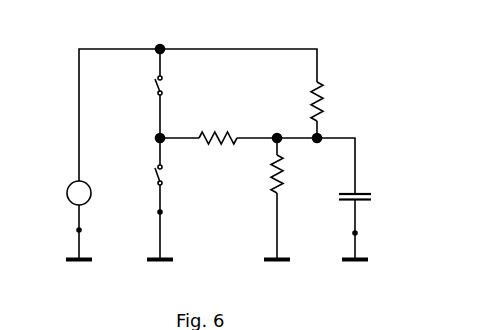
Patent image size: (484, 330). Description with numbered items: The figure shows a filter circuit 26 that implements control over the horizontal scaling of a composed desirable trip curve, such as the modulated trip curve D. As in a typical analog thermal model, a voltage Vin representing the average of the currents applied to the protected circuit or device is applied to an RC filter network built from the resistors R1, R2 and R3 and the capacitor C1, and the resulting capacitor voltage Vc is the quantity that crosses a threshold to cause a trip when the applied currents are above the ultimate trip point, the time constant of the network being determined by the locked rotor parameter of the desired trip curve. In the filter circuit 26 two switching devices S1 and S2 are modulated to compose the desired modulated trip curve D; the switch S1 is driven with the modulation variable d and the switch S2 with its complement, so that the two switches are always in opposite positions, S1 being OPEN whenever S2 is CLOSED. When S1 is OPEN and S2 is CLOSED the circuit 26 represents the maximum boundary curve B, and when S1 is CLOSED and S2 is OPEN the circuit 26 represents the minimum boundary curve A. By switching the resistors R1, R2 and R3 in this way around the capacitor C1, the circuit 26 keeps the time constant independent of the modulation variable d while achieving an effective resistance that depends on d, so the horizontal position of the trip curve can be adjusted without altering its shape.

The filter circuit 26 is at (216, 176).
The voltage Vin is at (66, 220).
The first switching device S1 is at (158, 93).
The second switching device S2 is at (164, 199).
The resistor R1 is at (303, 112).
The resistor R2 is at (218, 128).
The resistor R3 is at (266, 197).
The capacitor C1 is at (366, 223).
The capacitor voltage Vc is at (331, 197).